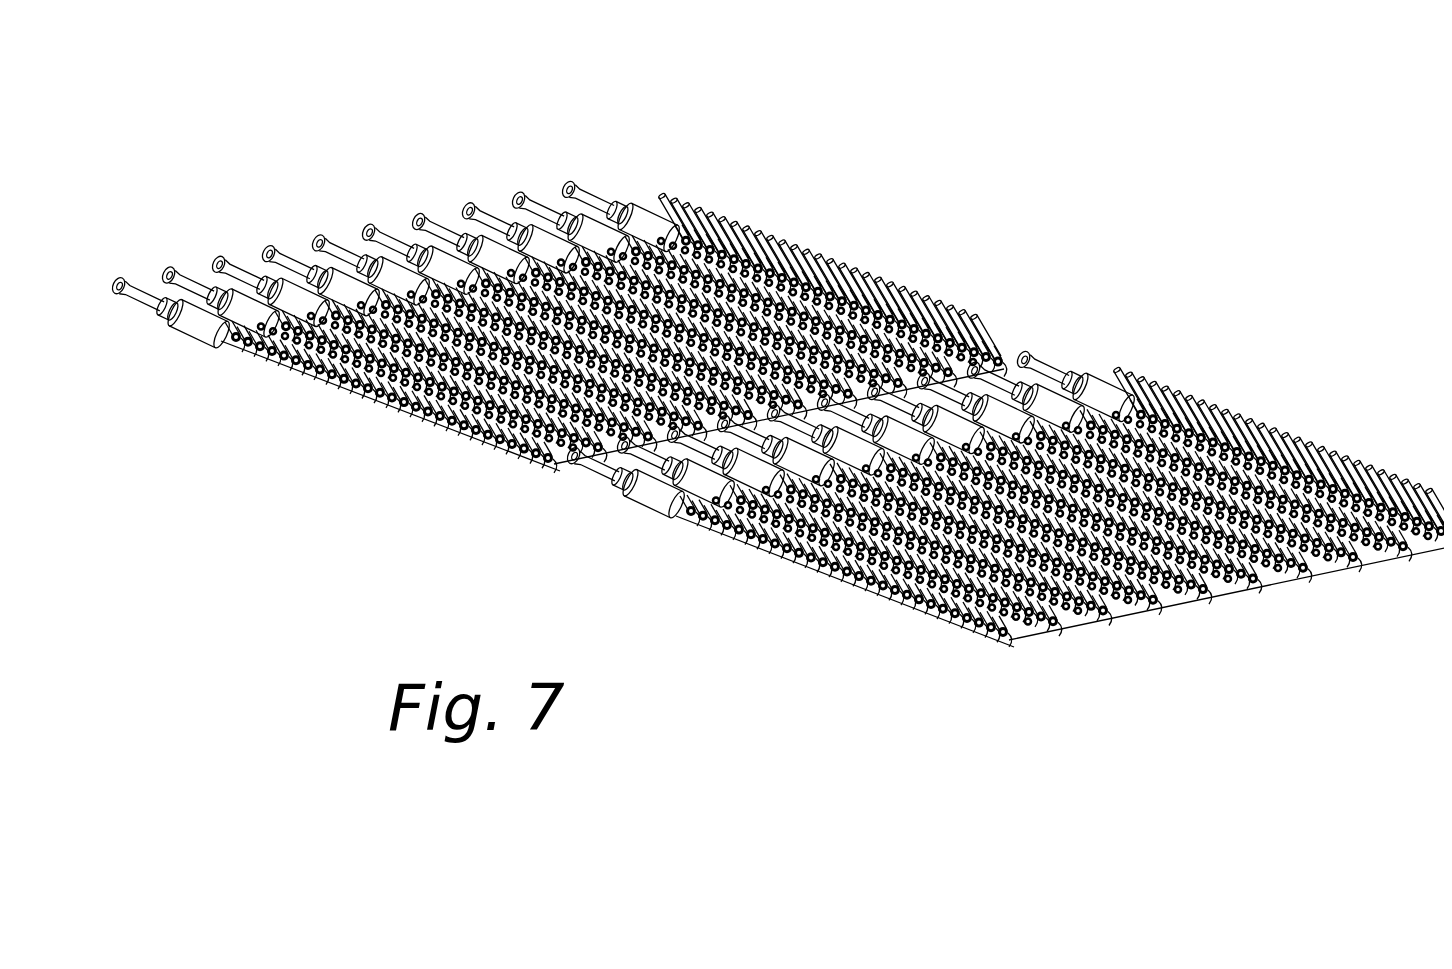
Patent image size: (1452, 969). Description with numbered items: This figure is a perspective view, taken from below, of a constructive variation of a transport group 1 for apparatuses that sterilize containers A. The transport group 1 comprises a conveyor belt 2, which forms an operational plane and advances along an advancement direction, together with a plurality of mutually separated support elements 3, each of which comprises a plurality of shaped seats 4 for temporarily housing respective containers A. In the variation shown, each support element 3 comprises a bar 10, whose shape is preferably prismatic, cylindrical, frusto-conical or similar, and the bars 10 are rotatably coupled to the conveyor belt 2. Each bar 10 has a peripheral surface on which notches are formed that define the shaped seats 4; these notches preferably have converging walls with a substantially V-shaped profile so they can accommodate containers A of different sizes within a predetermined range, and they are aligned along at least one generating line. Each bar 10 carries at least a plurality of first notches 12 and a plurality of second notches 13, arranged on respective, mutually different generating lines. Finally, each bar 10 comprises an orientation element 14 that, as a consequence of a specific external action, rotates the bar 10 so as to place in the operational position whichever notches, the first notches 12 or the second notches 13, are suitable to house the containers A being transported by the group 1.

The transport group 1 is at (1103, 146).
The conveyor belt 2 is at (496, 210).
The support element 3 is at (453, 198).
The shaped seat 4 is at (179, 332).
The bar 10 is at (607, 200).
The first notches 12 is at (1102, 378).
The second notches 13 is at (637, 500).
The orientation element 14 is at (553, 172).
The container A is at (723, 217).